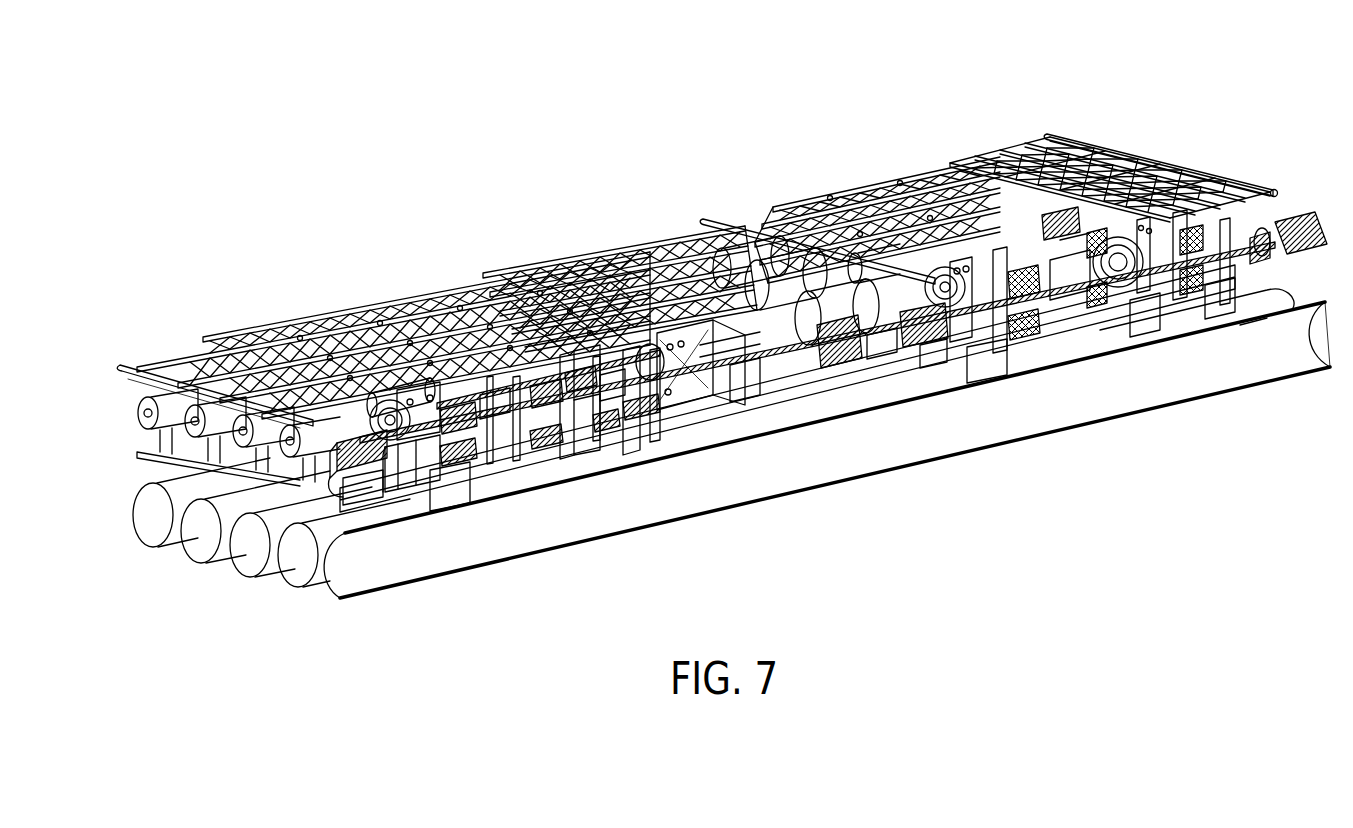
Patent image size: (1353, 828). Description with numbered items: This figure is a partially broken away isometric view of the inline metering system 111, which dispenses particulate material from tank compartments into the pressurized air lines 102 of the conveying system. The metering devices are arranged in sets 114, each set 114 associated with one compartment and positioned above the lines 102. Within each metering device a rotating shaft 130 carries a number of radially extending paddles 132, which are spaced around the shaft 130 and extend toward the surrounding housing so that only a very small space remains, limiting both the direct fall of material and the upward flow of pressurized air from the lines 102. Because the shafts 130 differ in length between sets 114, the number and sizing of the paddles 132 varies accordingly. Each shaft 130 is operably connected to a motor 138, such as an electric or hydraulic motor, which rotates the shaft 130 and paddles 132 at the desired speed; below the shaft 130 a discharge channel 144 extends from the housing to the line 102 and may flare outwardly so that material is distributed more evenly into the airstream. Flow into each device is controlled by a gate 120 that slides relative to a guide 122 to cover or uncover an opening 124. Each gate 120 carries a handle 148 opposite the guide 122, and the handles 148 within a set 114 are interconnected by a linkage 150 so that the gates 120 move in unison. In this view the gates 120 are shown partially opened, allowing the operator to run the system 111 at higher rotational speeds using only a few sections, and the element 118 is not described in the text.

The line 102 is at (352, 578).
The inline metering system 111 is at (707, 233).
The set 114 is at (270, 300).
The rail 118 is at (503, 498).
The gate 120 is at (365, 410).
The guide 122 is at (568, 355).
The opening 124 is at (640, 345).
The rotating shaft 130 is at (594, 407).
The paddle 132 is at (553, 417).
The motor 138 is at (394, 432).
The discharge channel 144 is at (444, 494).
The handle 148 is at (118, 368).
The linkage 150 is at (122, 377).